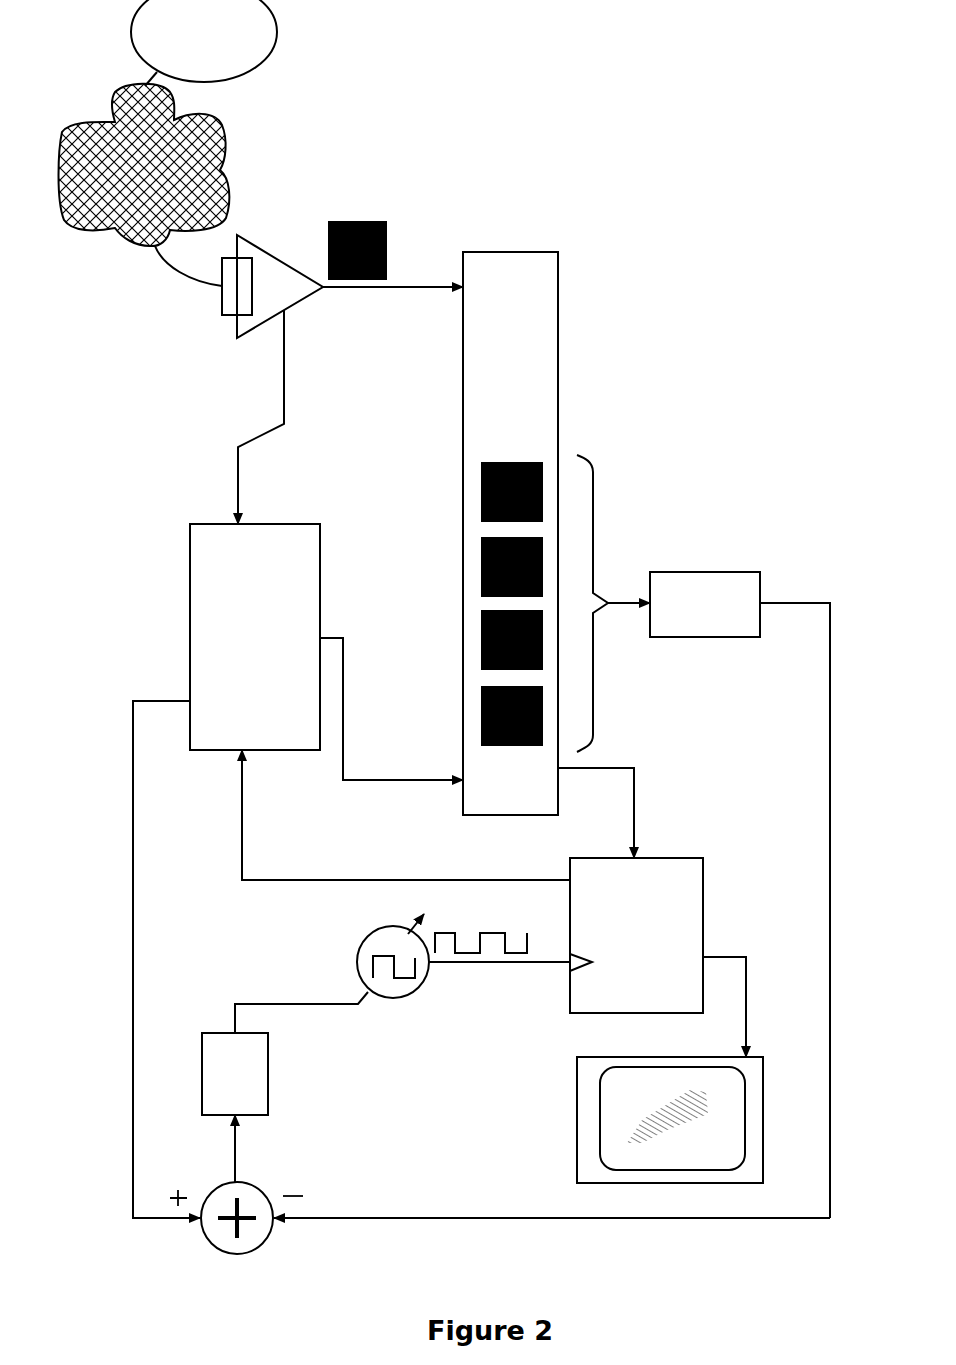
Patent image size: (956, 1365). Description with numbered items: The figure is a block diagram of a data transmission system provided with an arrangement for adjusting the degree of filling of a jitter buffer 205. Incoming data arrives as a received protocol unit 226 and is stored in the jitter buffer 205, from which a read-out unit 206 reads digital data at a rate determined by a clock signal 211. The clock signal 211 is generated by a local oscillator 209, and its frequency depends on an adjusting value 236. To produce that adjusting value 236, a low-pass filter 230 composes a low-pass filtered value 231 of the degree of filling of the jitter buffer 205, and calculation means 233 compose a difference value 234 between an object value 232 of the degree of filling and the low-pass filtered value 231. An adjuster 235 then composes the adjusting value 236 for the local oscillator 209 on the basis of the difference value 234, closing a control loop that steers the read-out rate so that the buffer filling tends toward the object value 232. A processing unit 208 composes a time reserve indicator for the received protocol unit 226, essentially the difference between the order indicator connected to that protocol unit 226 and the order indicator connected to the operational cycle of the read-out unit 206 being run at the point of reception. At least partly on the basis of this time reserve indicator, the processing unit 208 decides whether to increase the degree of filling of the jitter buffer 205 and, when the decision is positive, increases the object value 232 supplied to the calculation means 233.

The jitter buffer 205 is at (558, 370).
The read-out unit 206 is at (700, 857).
The processing unit 208 is at (190, 556).
The local oscillator 209 is at (362, 952).
The clock signal 211 is at (492, 966).
The received protocol unit 226 is at (386, 245).
The low-pass filter 230 is at (680, 572).
The low-pass filtered value 231 is at (388, 1216).
The object value 232 is at (133, 922).
The calculation means 233 is at (256, 1248).
The difference value 234 is at (237, 1156).
The adjuster 235 is at (268, 1080).
The adjusting value 236 is at (345, 1004).